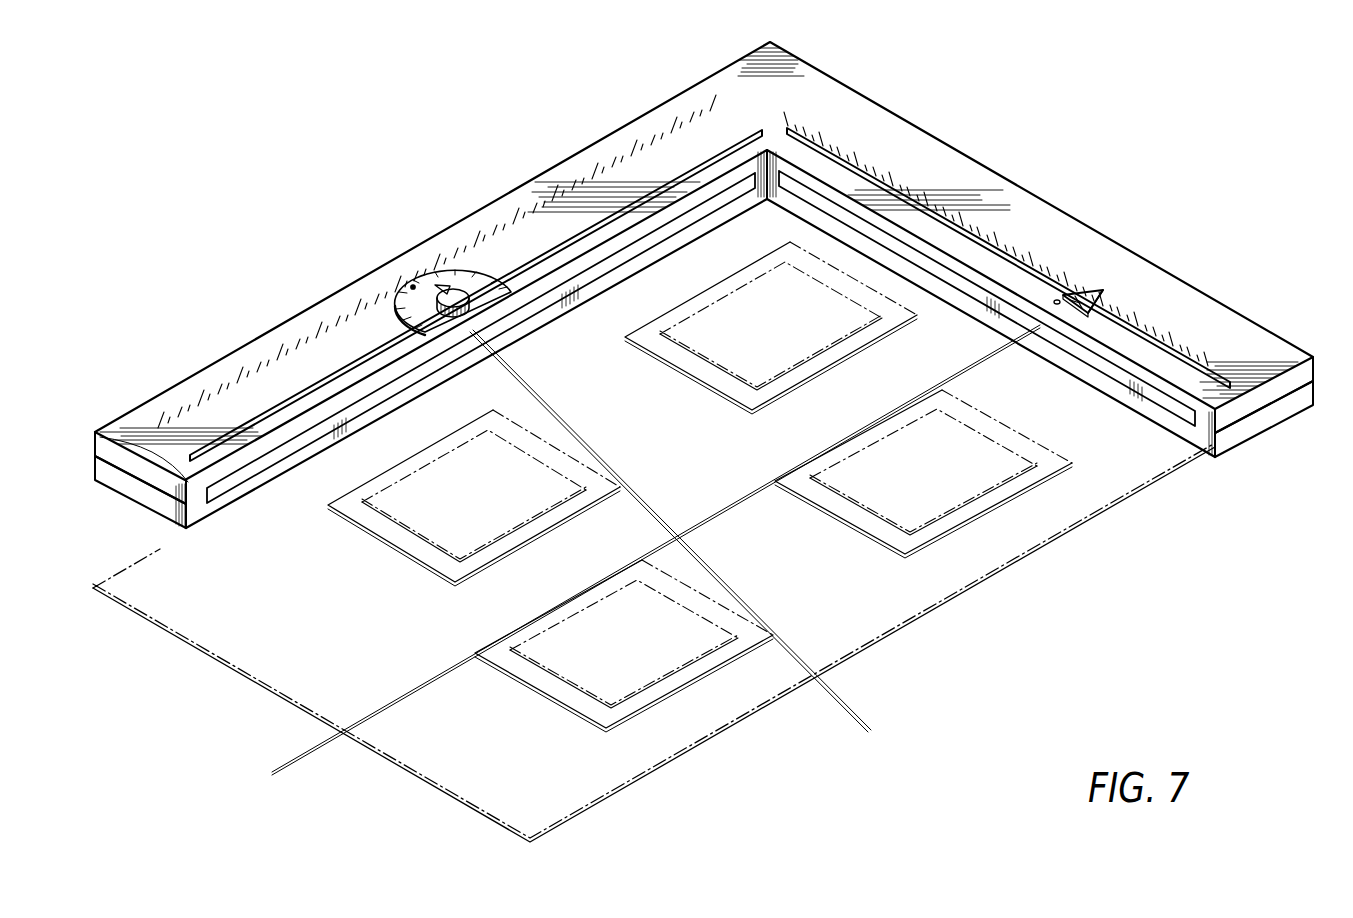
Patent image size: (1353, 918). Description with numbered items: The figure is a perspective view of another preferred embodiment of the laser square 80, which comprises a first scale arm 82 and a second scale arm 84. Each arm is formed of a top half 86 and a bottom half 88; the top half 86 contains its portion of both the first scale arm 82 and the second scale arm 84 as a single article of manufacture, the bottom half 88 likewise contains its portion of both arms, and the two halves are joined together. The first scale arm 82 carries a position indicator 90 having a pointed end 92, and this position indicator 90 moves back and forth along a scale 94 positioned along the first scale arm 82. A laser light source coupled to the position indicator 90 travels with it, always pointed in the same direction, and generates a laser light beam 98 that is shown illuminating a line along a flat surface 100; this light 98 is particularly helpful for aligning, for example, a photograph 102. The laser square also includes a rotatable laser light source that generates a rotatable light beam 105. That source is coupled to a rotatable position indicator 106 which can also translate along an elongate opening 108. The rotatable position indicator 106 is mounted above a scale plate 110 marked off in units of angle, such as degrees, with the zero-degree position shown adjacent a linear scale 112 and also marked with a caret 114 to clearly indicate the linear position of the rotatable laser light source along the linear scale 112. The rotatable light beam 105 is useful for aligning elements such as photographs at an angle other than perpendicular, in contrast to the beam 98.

The laser square 80 is at (447, 183).
The first scale arm 82 is at (1218, 318).
The second scale arm 84 is at (695, 95).
The top half 86 is at (105, 453).
The bottom half 88 is at (133, 492).
The position indicator 90 is at (1085, 282).
The pointed end 92 is at (1100, 290).
The scale 94 is at (783, 132).
The laser light beam 98 is at (985, 362).
The flat surface 100 is at (878, 607).
The photograph 102 is at (1006, 504).
The rotatable light beam 105 is at (565, 417).
The rotatable position indicator 106 is at (443, 286).
The elongate opening 108 is at (741, 128).
The scale plate 110 is at (468, 282).
The linear scale 112 is at (147, 452).
The caret 114 is at (412, 286).